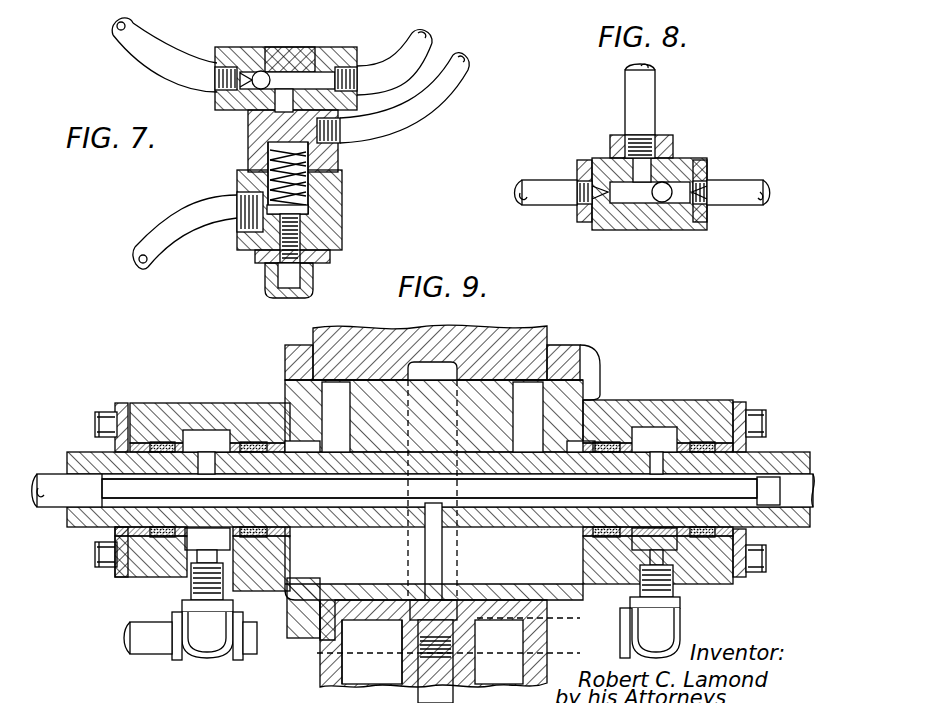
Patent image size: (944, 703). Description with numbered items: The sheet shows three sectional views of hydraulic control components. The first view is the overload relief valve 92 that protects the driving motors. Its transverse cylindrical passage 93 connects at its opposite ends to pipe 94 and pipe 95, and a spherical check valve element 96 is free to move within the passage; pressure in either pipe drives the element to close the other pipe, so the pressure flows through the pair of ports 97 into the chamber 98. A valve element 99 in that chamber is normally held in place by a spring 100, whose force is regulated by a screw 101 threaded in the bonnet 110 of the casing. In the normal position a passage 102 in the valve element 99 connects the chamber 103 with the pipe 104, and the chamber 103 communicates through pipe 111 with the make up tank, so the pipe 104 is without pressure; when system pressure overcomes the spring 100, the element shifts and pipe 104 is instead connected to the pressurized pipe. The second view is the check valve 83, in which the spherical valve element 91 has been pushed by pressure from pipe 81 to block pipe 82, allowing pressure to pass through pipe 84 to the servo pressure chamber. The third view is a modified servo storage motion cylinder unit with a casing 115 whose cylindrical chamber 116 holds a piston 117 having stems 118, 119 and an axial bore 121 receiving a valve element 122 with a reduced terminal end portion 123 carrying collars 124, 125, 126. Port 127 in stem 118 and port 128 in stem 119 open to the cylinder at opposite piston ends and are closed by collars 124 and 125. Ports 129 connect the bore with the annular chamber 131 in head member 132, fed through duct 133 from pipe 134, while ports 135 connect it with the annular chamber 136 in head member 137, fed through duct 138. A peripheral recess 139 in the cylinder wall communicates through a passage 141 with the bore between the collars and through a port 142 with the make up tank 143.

In FIG. 8, the pipe 81 is at (535, 186).
In FIG. 8, the pipe 82 is at (745, 186).
In FIG. 8, the check valve 83 is at (632, 215).
In FIG. 8, the pipe 84 is at (648, 90).
In FIG. 8, the spherical valve element 91 is at (660, 202).
In FIG. 7, the valve 92 is at (262, 140).
In FIG. 7, the transverse cylindrical passage 93 is at (300, 75).
In FIG. 7, the pipe 94 is at (430, 36).
In FIG. 7, the pipe 95 is at (150, 58).
In FIG. 7, the spherical check valve element 96 is at (262, 71).
In FIG. 7, the ports 97 is at (272, 100).
In FIG. 7, the chamber 98 is at (274, 106).
In FIG. 7, the valve element 99 is at (341, 158).
In FIG. 7, the spring 100 is at (310, 183).
In FIG. 7, the screw 101 is at (302, 228).
In FIG. 7, the passage 102 is at (290, 165).
In FIG. 7, the chamber 103 is at (270, 222).
In FIG. 7, the pipe 104 is at (455, 96).
In FIG. 7, the bonnet 110 is at (337, 246).
In FIG. 7, the pipe 111 is at (168, 212).
In FIG. 9, the casing 115 is at (333, 348).
In FIG. 9, the cylindrical chamber 116 is at (310, 400).
In FIG. 9, the piston 117 is at (500, 415).
In FIG. 9, the stem 118 is at (82, 452).
In FIG. 9, the stem 119 is at (785, 452).
In FIG. 9, the axial bore 121 is at (105, 535).
In FIG. 9, the valve element 122 is at (48, 495).
In FIG. 9, the reduced terminal end portion 123 is at (740, 500).
In FIG. 9, the collar 124 is at (320, 492).
In FIG. 9, the collar 125 is at (565, 440).
In FIG. 9, the collar 126 is at (768, 477).
In FIG. 9, the port 127 is at (300, 600).
In FIG. 9, the port 128 is at (570, 565).
In FIG. 9, the ports 129 is at (206, 452).
In FIG. 9, the annular chamber 131 is at (155, 578).
In FIG. 9, the head member 132 is at (145, 410).
In FIG. 9, the duct 133 is at (222, 598).
In FIG. 9, the pipe 134 is at (252, 650).
In FIG. 9, the ports 135 is at (655, 530).
In FIG. 9, the annular chamber 136 is at (655, 428).
In FIG. 9, the head member 137 is at (592, 400).
In FIG. 9, the duct 138 is at (680, 598).
In FIG. 9, the peripheral recess 139 is at (415, 368).
In FIG. 9, the passage 141 is at (438, 580).
In FIG. 9, the port 142 is at (425, 625).
In FIG. 9, the make up tank 143 is at (495, 665).